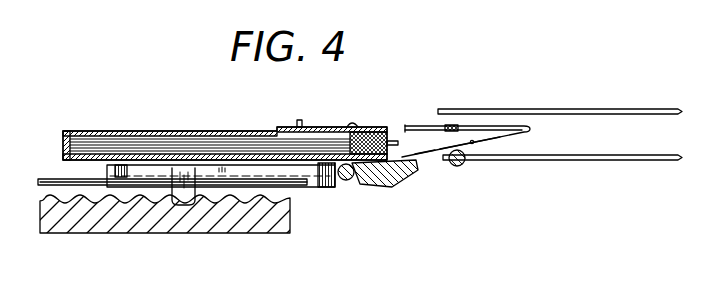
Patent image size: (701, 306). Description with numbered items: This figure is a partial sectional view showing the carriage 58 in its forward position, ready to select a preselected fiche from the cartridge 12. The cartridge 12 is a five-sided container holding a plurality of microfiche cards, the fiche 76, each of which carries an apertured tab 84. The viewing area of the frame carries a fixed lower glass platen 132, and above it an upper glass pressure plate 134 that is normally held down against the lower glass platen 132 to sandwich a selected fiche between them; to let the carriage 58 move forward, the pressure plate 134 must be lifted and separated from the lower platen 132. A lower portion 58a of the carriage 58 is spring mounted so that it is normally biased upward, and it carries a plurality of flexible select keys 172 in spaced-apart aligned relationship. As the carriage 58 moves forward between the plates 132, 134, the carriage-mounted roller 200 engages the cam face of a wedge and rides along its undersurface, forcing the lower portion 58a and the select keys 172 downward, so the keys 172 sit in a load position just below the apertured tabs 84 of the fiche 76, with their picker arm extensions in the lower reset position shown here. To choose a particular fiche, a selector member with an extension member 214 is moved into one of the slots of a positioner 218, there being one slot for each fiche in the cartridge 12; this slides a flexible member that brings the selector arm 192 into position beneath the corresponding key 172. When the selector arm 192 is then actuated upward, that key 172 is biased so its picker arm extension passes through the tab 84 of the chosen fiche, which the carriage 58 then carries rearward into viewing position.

The cartridge 12 is at (78, 129).
The fiche 76 is at (163, 143).
The apertured tab 84 is at (402, 157).
The upper glass pressure plate 134 is at (473, 108).
The carriage 58 is at (510, 123).
The lower portion of carriage 58a is at (516, 137).
The lower glass platen 132 is at (610, 142).
The carriage-mounted roller 200 is at (458, 166).
The flexible select key 172 is at (424, 162).
The selector arm 192 is at (372, 187).
The extension member 214 is at (186, 207).
The positioner 218 is at (62, 236).